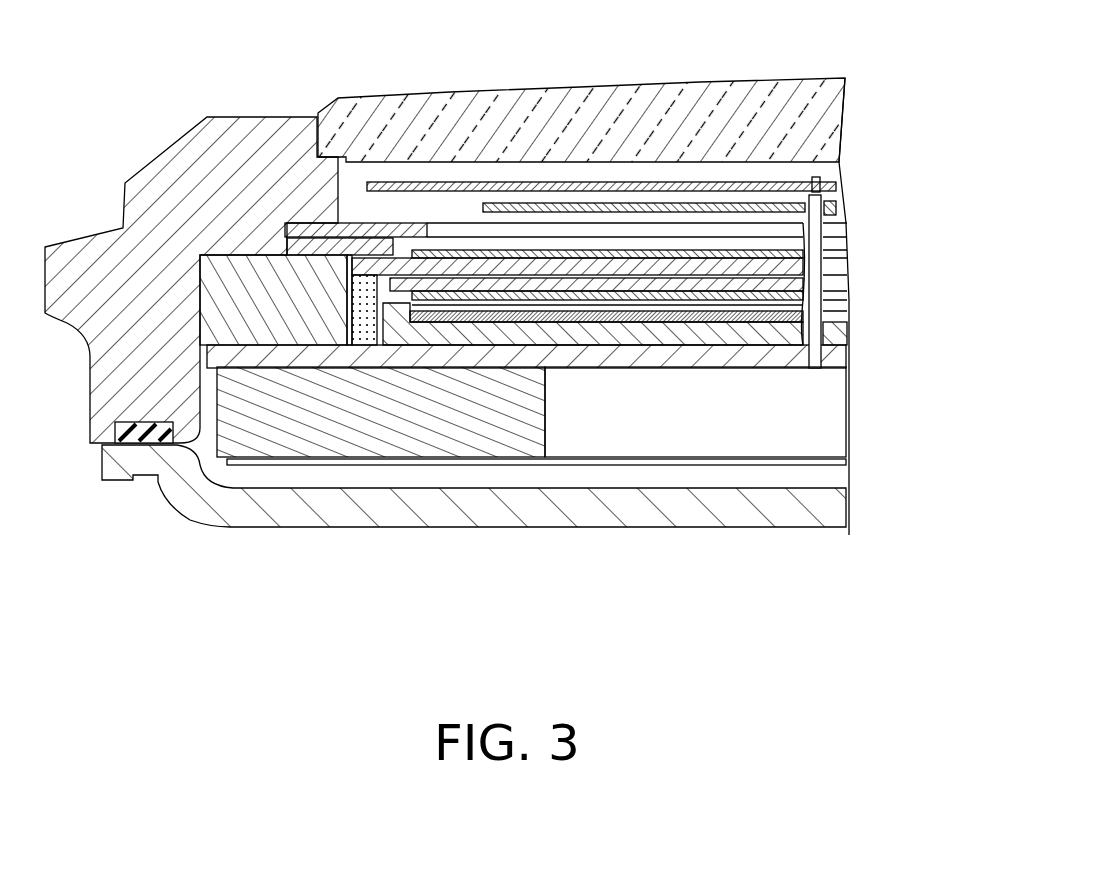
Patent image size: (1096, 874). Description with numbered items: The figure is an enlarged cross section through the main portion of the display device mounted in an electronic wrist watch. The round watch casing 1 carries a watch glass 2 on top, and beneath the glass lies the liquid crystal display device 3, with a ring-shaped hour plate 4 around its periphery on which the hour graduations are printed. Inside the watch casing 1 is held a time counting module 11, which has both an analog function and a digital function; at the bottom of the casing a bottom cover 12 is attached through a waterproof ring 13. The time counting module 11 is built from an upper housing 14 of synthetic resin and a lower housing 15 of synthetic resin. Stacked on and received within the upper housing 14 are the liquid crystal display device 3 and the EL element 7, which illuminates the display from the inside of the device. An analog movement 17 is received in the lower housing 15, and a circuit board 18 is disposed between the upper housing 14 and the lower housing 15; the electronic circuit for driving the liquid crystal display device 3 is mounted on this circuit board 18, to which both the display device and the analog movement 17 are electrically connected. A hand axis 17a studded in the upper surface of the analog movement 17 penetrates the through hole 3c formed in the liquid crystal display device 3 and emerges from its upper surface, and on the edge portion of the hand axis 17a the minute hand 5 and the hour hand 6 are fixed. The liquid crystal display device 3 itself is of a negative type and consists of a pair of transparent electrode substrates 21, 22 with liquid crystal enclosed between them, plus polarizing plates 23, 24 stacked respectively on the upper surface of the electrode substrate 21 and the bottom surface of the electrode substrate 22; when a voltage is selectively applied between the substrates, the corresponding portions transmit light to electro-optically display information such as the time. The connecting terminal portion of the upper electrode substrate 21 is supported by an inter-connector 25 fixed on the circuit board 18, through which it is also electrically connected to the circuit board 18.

The watch casing 1 is at (172, 137).
The watch glass 2 is at (352, 152).
The liquid crystal display device 3 is at (447, 240).
The through hole 3c is at (800, 268).
The hour plate 4 is at (303, 225).
The minute hand 5 is at (806, 182).
The hour hand 6 is at (806, 203).
The EL element 7 is at (692, 290).
The time counting module 11 is at (474, 483).
The bottom cover 12 is at (522, 517).
The waterproof ring 13 is at (143, 430).
The upper housing 14 is at (737, 335).
The lower housing 15 is at (350, 440).
The analog movement 17 is at (720, 438).
The hand axis 17a is at (815, 230).
The circuit board 18 is at (263, 353).
The transparent electrode substrate 21 is at (520, 262).
The transparent electrode substrate 22 is at (637, 282).
The polarizing plate 23 is at (472, 249).
The polarizing plate 24 is at (776, 268).
The inter-connector 25 is at (378, 328).